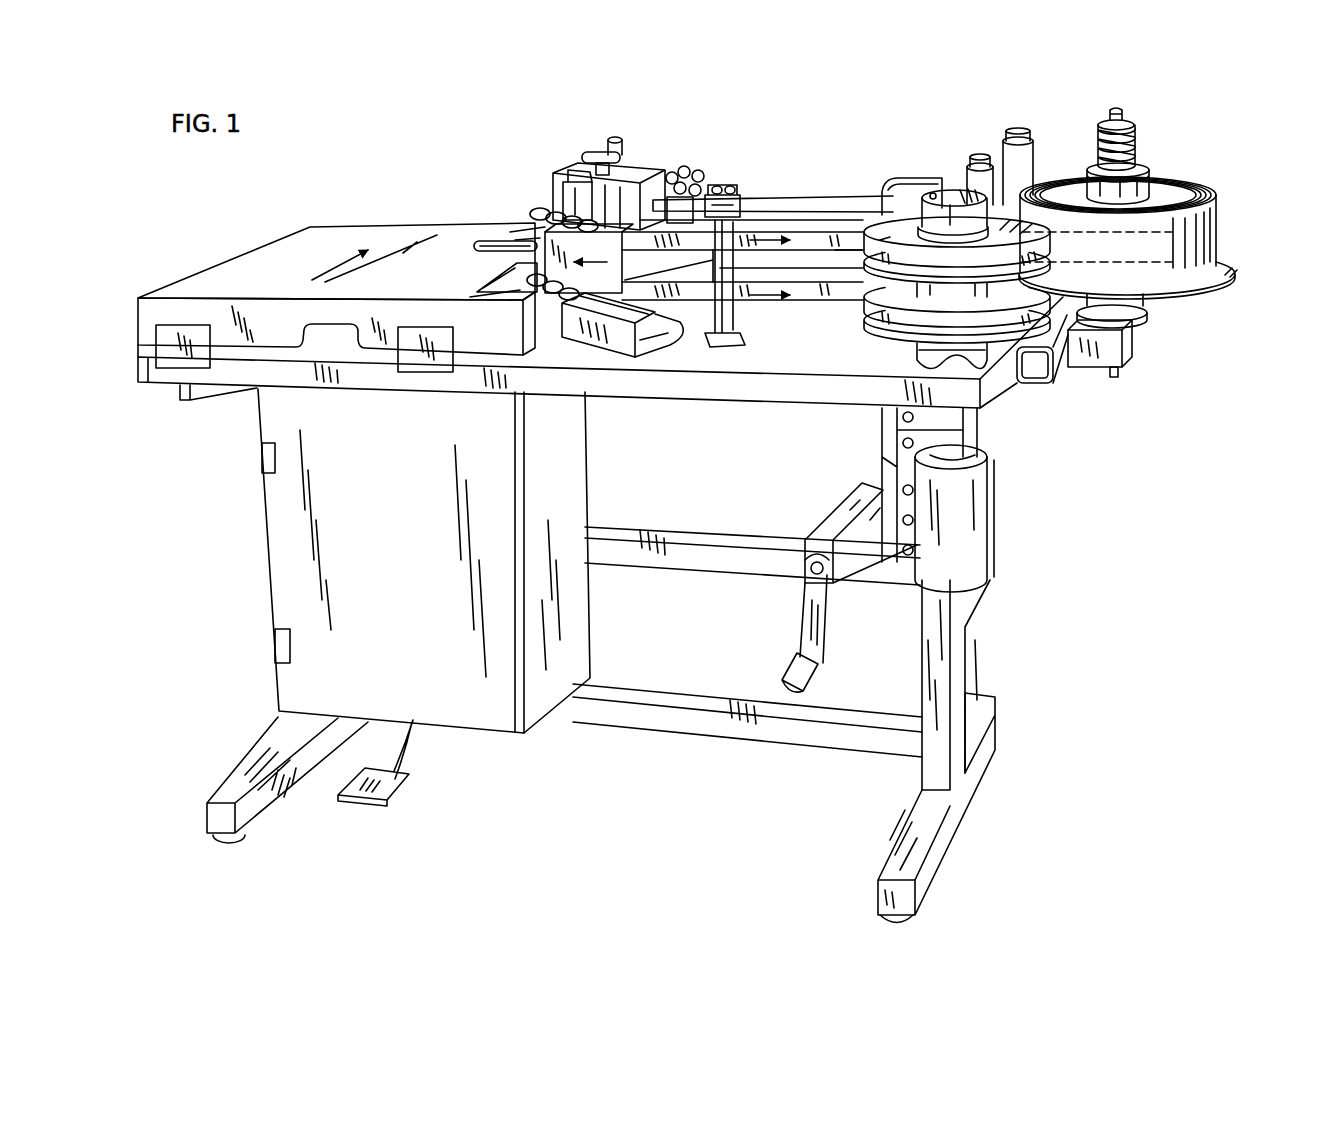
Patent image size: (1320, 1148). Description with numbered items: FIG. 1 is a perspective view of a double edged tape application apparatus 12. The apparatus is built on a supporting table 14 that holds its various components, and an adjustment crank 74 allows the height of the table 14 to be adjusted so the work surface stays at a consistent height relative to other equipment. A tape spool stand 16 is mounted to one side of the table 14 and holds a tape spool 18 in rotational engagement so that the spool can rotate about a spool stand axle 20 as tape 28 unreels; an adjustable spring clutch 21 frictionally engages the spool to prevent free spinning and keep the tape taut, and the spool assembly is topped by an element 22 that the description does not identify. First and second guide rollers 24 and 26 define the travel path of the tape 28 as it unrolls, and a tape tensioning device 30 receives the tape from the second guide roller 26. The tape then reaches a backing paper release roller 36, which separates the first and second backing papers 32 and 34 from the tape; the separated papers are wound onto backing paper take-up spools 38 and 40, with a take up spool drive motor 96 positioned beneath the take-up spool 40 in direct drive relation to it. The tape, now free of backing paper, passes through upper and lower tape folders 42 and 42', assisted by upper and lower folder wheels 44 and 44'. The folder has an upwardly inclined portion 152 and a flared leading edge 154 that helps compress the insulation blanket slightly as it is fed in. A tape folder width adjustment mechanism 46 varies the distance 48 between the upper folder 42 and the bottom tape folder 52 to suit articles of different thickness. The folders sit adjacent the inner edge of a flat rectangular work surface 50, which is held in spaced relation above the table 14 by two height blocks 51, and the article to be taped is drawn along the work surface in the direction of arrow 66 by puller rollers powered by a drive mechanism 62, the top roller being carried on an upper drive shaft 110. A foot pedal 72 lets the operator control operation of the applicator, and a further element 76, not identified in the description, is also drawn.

The double edged tape application apparatus 12 is at (207, 718).
The supporting table 14 is at (967, 667).
The tape spool stand 16 is at (1128, 347).
The tape spool 18 is at (1231, 212).
The spool stand axle 20 is at (1123, 112).
The adjustable spring clutch 21 is at (1135, 138).
The spool hub 22 is at (1058, 168).
The first guide roller 24 is at (1003, 152).
The second guide roller 26 is at (967, 170).
The tape 28 is at (845, 218).
The tape tensioning device 30 is at (734, 178).
The first backing paper 32 is at (803, 236).
The second backing paper 34 is at (800, 298).
The backing paper release roller 36 is at (650, 230).
The backing paper take-up spool 38 is at (846, 245).
The backing paper take-up spool 40 is at (898, 298).
The upper tape folder 42 is at (519, 192).
The lower tape folder 42' is at (497, 273).
The upper folder wheel 44 is at (562, 182).
The lower folder wheel 44' is at (556, 365).
The tape folder width adjustment mechanism 46 is at (594, 136).
The distance between upper and lower tape folders 48 is at (452, 293).
The work surface 50 is at (326, 244).
The height blocks 51 is at (178, 345).
The bottom tape folder 52 is at (507, 290).
The drive mechanism 62 is at (915, 178).
The insulation blanket feed direction arrow 66 is at (330, 266).
The foot pedal 72 is at (383, 782).
The adjustment crank 74 is at (805, 620).
The support post 76 is at (733, 313).
The take up spool drive motor 96 is at (990, 500).
The upper drive shaft 110 is at (822, 195).
The upwardly inclined portion 152 is at (597, 232).
The leading edge 154 is at (474, 243).